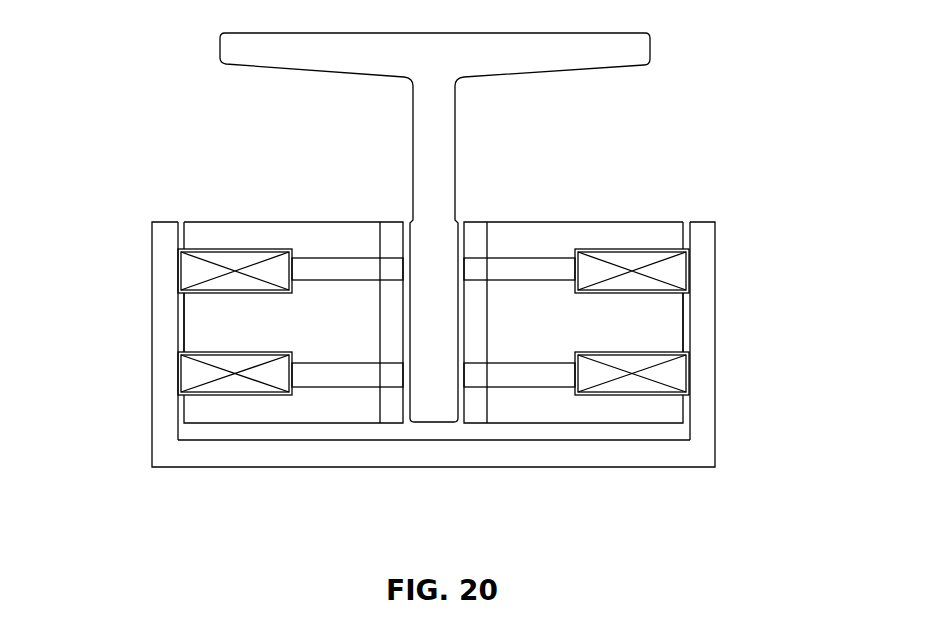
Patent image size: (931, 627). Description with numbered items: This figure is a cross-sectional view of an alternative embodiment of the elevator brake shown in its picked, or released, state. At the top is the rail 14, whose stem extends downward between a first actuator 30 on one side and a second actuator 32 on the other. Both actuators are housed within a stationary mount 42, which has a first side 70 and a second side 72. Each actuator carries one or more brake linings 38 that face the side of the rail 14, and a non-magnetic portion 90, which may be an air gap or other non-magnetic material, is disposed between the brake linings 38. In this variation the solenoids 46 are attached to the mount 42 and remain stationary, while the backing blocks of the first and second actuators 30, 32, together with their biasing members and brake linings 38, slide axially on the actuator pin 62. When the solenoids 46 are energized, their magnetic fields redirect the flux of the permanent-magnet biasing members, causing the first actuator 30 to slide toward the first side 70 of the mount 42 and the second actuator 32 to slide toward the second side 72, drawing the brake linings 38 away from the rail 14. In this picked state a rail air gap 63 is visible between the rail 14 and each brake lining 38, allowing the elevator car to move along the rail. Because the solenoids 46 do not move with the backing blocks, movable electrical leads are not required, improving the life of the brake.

The rail 14 is at (605, 43).
The first actuator 30 is at (219, 207).
The second actuator 32 is at (606, 207).
The brake lining 38 is at (392, 228).
The mount 42 is at (185, 452).
The solenoid 46 is at (236, 374).
The actuator pin 62 is at (177, 327).
The rail air gap 63 is at (460, 417).
The first side of the mount 70 is at (172, 245).
The second side of the mount 72 is at (700, 300).
The non-magnetic portion 90 is at (393, 271).